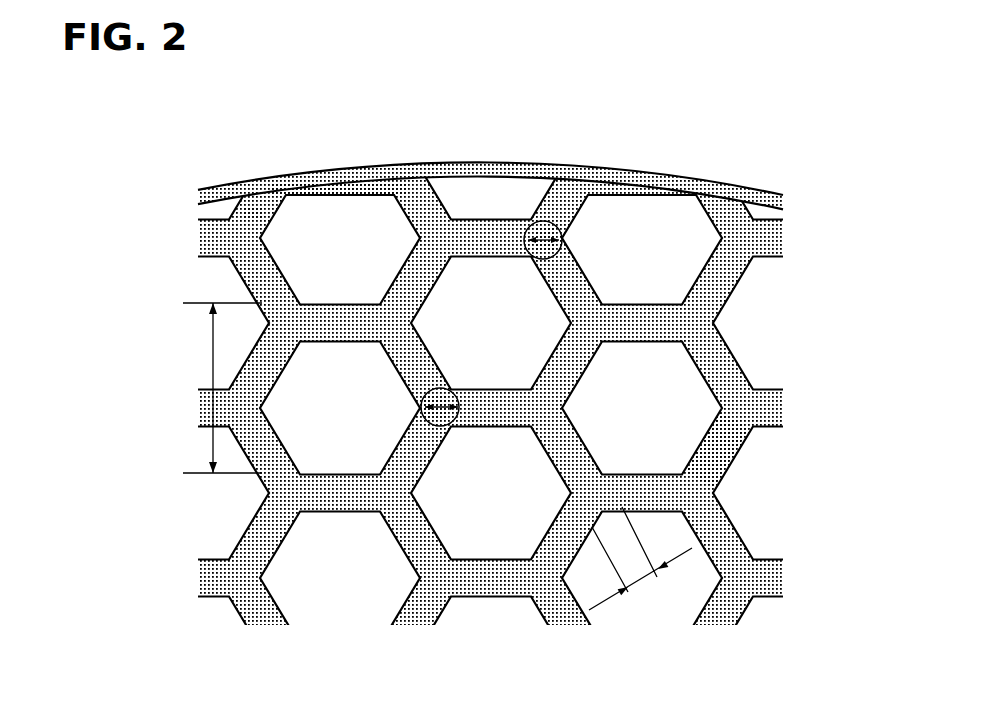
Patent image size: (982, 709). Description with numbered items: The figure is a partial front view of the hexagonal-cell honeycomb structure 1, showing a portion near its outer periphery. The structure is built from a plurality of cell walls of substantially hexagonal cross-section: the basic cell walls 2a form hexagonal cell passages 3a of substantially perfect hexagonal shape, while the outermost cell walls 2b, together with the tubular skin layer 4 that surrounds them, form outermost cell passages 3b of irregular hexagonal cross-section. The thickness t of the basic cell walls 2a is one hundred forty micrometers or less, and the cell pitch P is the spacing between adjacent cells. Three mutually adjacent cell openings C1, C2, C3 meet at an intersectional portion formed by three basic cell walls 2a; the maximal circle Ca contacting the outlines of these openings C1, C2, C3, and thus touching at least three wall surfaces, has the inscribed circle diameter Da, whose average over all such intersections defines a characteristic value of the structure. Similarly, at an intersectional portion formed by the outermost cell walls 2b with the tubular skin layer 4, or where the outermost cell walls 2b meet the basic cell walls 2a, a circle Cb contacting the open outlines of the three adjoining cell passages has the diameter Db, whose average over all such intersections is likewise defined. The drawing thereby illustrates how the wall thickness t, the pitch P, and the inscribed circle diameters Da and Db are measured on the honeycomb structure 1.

The hexagonal-cell honeycomb structure 1 is at (716, 158).
The basic cell walls 2a is at (734, 436).
The outermost cell walls 2b is at (426, 198).
The hexagonal cell passages 3a is at (652, 239).
The outermost cell passages 3b is at (498, 196).
The tubular skin layer 4 is at (338, 172).
The cell opening C1 is at (340, 408).
The cell opening C2 is at (491, 323).
The cell opening C3 is at (491, 493).
The circle Ca is at (448, 413).
The circle Cb is at (543, 225).
The inscribed circle diameter Da is at (438, 421).
The circle diameter Db is at (563, 232).
The cell pitch P is at (220, 388).
The thickness t is at (640, 558).